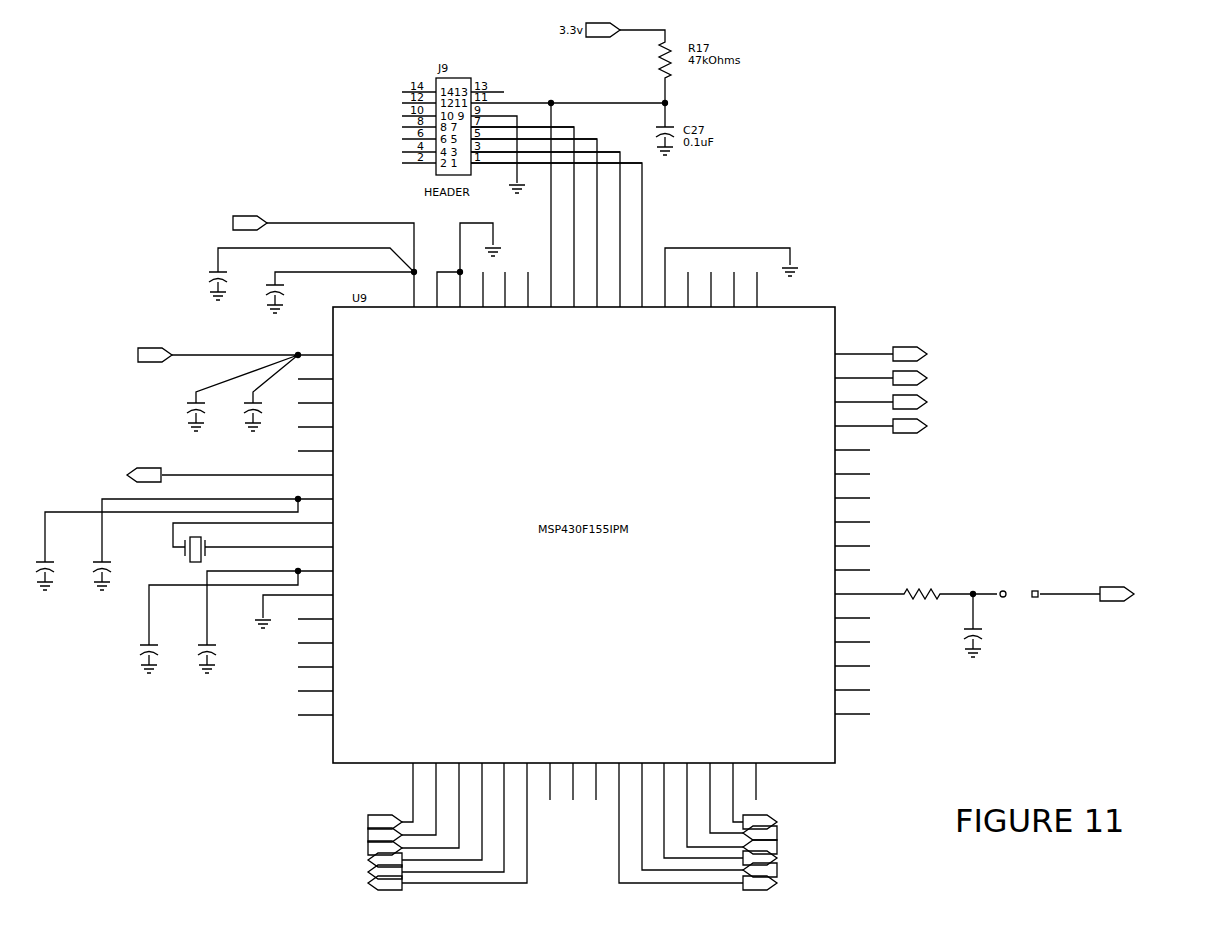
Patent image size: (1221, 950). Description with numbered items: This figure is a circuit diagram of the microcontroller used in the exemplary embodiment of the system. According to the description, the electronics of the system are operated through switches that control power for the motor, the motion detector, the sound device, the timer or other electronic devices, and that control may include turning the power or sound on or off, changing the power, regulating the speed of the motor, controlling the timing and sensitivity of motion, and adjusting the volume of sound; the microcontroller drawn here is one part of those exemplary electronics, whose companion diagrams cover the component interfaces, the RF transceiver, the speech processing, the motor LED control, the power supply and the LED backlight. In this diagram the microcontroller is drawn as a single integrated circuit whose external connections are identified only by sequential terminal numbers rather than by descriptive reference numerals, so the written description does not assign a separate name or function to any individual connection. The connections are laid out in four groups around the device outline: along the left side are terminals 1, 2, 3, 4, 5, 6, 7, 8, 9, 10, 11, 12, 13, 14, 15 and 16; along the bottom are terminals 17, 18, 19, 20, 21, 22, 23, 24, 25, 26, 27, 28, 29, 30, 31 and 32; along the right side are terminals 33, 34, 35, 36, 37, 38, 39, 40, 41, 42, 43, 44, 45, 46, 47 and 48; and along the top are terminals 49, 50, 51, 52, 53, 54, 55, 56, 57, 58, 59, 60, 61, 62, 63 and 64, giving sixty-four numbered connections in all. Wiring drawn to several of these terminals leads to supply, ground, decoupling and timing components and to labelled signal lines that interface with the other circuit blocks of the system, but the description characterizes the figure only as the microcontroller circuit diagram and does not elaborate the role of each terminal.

The U9 pin 1 DVcc 1 is at (239, 386).
The U9 pin 2 P6.3/A3 2 is at (339, 376).
The U9 pin 3 P6.3/A4 3 is at (339, 400).
The U9 pin 4 P6.3/A5 4 is at (339, 424).
The U9 pin 5 P6.3/A6/DAC0 5 is at (356, 448).
The U9 pin 6 P6.3/A7/DAC1/SVSIN 6 is at (256, 472).
The U9 pin 7 VREF+ 7 is at (206, 538).
The U9 pin 8 XIN 8 is at (265, 536).
The U9 pin 9 XOUT 9 is at (287, 544).
The U9 pin 10 VeREF+ 10 is at (261, 615).
The U9 pin 11 VREF-/VeREF- 11 is at (333, 605).
The U9 pin 12 P1.0/TACLK 12 is at (349, 616).
The U9 pin 13 P1.1/TA0 13 is at (342, 640).
The U9 pin 14 P1.2/TA1 14 is at (342, 664).
The U9 pin 15 P1.3/TA2 15 is at (342, 688).
The U9 pin 16 P1.4/SMCLK 16 is at (351, 712).
The U9 pin 17 P1.5/TA0 17 is at (376, 769).
The U9 pin 18 P1.6/TA1 18 is at (387, 775).
The U9 pin 19 P1.7/TA2 19 is at (400, 782).
The U9 pin 20 P2.0/ACLK 20 is at (411, 783).
The U9 pin 21 P2.1/TAINCLK 21 is at (424, 780).
The U9 pin 22 P2.2/CAOUT/TA0 22 is at (442, 778).
The U9 pin 23 P2.3/CA0/TA1 23 is at (547, 741).
The U9 pin 24 P2.4/CA1/TA2 24 is at (570, 741).
The U9 pin 25 P2.5/ROSC 25 is at (593, 749).
The U9 pin 26 P2.6/ADC12CLK/DMAE0 26 is at (710, 758).
The U9 pin 27 P2.7/TA0 27 is at (721, 793).
The U9 pin 28 P3.0/STE0 28 is at (727, 783).
The U9 pin 29 P3.1/SIMO0/SDA 29 is at (732, 760).
The U9 pin 30 P3.2/SOMI0 30 is at (747, 767).
The U9 pin 31 P3.3/UCLK0/SCL 31 is at (765, 748).
The U9 pin 32 P3.4/UTXD0 32 is at (753, 745).
The U9 pin 33 P3.5/URXD0 33 is at (816, 711).
The U9 pin 34 P3.6 34 is at (838, 687).
The U9 pin 35 P3.7 35 is at (838, 663).
The U9 pin 36 P4.0/TB0 36 is at (825, 639).
The U9 pin 37 P4.1/TB1 37 is at (825, 615).
The U9 pin 38 P4.2/TB2 38 is at (990, 612).
The U9 pin 39 P4.3 39 is at (838, 567).
The U9 pin 40 P4.4 40 is at (838, 543).
The U9 pin 41 P4.5 41 is at (838, 519).
The U9 pin 42 P4.6 42 is at (838, 495).
The U9 pin 43 P4.7/TBCLK 43 is at (818, 471).
The U9 pin 44 P5.0 44 is at (838, 447).
The U9 pin 45 P5.1 45 is at (882, 423).
The U9 pin 46 P5.2 46 is at (882, 399).
The U9 pin 47 P5.3 47 is at (898, 375).
The U9 pin 48 P5.4/MCLK 48 is at (890, 351).
The U9 pin 49 P5.5/SMCLK 49 is at (754, 325).
The U9 pin 50 P5.6/ACLK 50 is at (731, 321).
The U9 pin 51 P5.7/TBOUTH/SVSOUT 51 is at (708, 354).
The U9 pin 52 XT2OUT 52 is at (685, 315).
The U9 pin 53 XT2IN 53 is at (725, 297).
The U9 pin 54 TDO/TDI 54 is at (560, 262).
The U9 pin 55 TDI/TCLK 55 is at (549, 258).
The U9 pin 56 TMS 56 is at (537, 238).
The U9 pin 57 TCK 57 is at (526, 231).
The U9 pin 58 RST/NMI 58 is at (548, 231).
The U9 pin 59 P6.0/A0 59 is at (525, 314).
The U9 pin 60 P6.1/A1 60 is at (502, 314).
The U9 pin 61 P6.2/A2 61 is at (480, 314).
The U9 pin 62 AVss 62 is at (474, 281).
The U9 pin 63 DVss 63 is at (442, 306).
The U9 pin 64 AVcc 64 is at (313, 278).